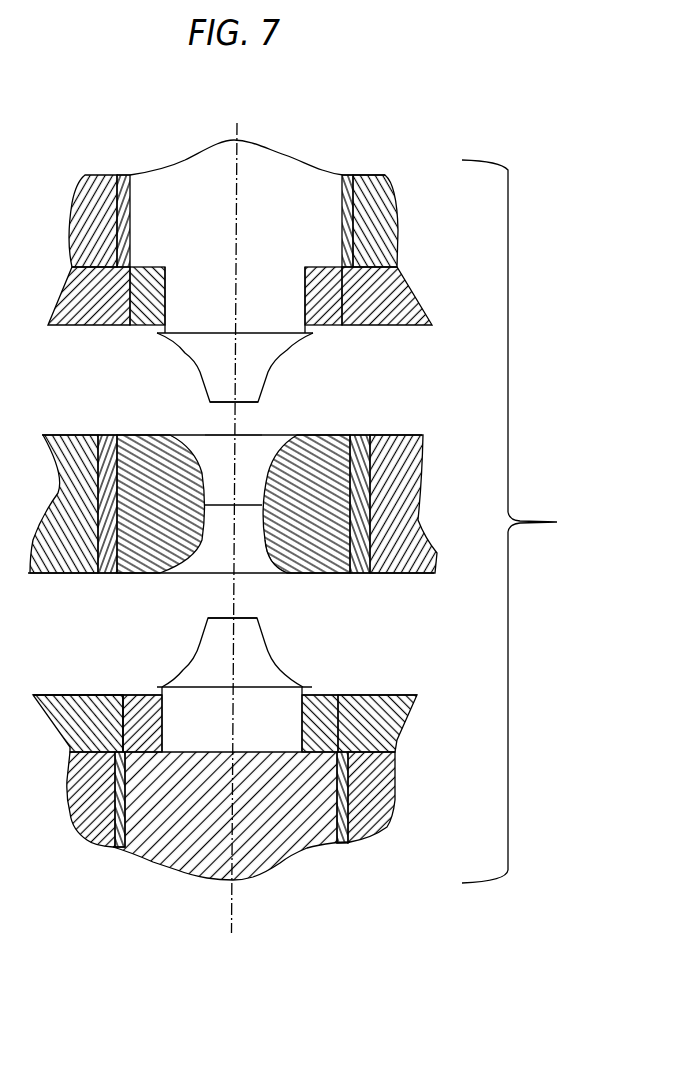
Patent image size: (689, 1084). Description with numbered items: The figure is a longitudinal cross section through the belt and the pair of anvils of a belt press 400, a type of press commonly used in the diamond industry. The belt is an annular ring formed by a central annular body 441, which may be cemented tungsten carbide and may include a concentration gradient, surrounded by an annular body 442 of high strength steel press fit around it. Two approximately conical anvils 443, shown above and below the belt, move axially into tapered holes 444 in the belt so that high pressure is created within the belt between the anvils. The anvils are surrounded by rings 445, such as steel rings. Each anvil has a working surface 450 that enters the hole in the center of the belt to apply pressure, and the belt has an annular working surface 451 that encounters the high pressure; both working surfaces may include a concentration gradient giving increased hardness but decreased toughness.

The belt press 400 is at (536, 521).
The central annular body 441 is at (325, 442).
The annular body 442 is at (357, 573).
The anvils 443 is at (173, 364).
The tapered holes 444 is at (258, 436).
The rings 445 is at (138, 698).
The working surface 450 is at (218, 404).
The annular working surface 451 is at (267, 553).